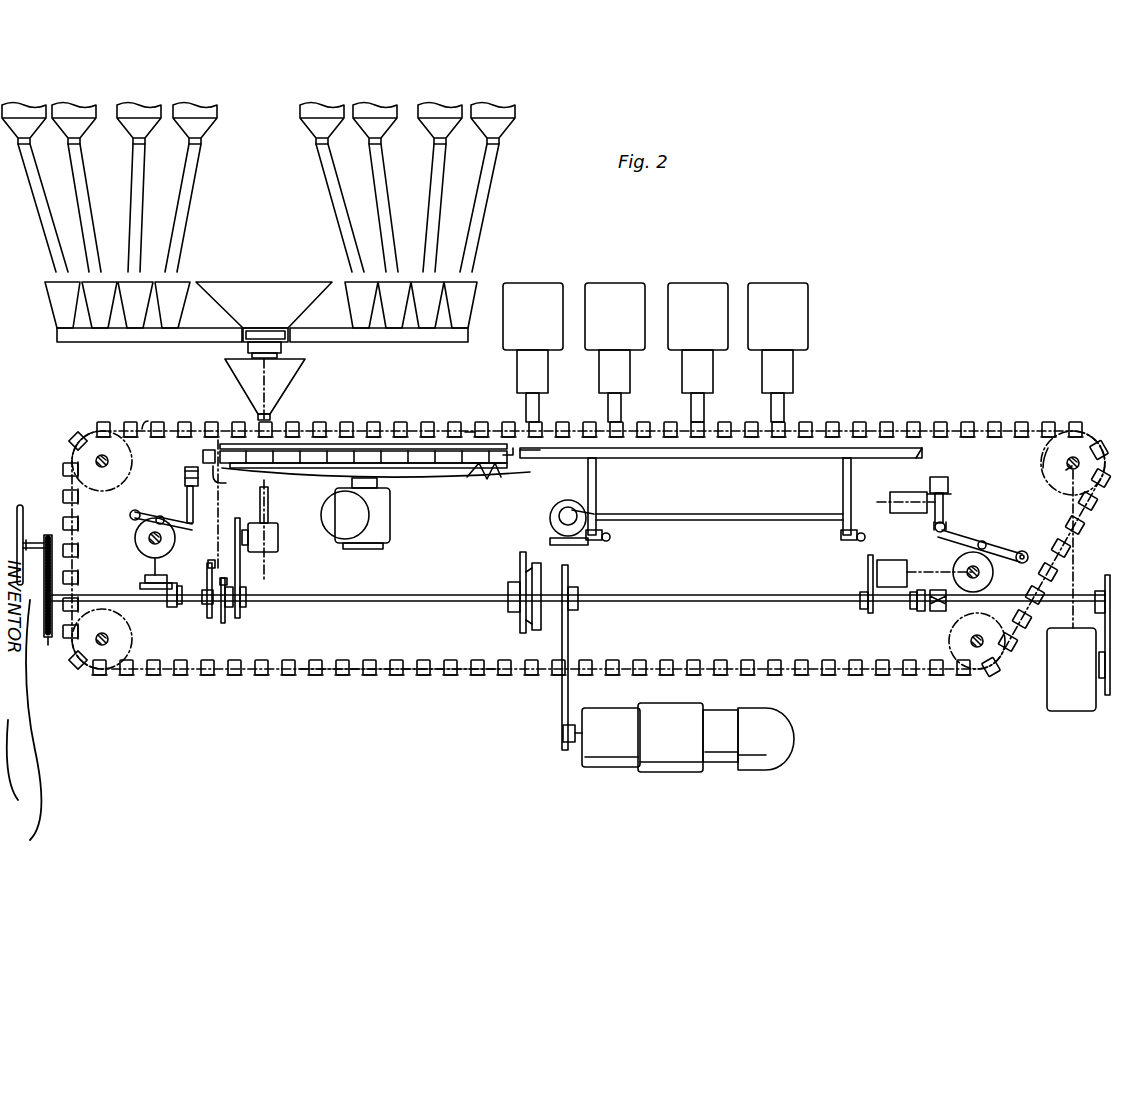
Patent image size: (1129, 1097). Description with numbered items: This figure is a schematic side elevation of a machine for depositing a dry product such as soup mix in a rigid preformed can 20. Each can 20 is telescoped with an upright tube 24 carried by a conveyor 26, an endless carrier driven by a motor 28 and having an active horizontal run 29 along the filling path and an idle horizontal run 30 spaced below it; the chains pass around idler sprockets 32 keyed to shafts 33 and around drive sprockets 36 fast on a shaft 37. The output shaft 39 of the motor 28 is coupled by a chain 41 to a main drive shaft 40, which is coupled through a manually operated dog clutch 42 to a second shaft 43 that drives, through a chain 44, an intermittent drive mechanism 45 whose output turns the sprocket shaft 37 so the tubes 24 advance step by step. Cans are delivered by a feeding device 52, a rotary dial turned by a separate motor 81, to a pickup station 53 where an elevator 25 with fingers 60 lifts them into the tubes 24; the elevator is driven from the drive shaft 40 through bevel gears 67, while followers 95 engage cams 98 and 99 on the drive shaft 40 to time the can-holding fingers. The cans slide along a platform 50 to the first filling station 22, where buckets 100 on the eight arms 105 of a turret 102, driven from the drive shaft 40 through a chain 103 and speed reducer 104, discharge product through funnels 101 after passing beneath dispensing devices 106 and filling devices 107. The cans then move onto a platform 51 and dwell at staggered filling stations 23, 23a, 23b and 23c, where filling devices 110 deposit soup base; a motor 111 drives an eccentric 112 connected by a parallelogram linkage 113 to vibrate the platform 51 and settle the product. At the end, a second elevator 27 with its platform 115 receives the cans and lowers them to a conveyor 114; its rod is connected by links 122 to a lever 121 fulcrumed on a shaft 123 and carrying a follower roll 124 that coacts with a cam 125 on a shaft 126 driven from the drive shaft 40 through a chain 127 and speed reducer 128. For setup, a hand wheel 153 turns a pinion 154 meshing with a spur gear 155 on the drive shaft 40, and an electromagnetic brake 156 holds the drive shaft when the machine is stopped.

The can 20 is at (772, 448).
The filling station 22 is at (262, 260).
The filling station 23 is at (549, 272).
The filling station 23a is at (628, 276).
The filling station 23b is at (706, 280).
The filling station 23c is at (786, 282).
The tube 24 is at (182, 422).
The elevator 25 is at (178, 483).
The conveyor 26 is at (146, 420).
The elevator 27 is at (963, 500).
The motor 28 is at (753, 770).
The horizontal run 29 is at (467, 427).
The idle horizontal run 30 is at (379, 690).
The idler sprocket 32 is at (85, 478).
The shaft 33 is at (108, 462).
The drive sprocket 36 is at (1044, 470).
The shaft 37 is at (1068, 466).
The output shaft 39 is at (574, 743).
The drive shaft 40 is at (615, 597).
The chain 41 is at (568, 620).
The dog clutch 42 is at (916, 610).
The second shaft 43 is at (1093, 592).
The chain 44 is at (1108, 575).
The intermittent drive mechanism 45 is at (1060, 711).
The platform 50 is at (518, 460).
The platform 51 is at (552, 460).
The feeding device 52 is at (430, 472).
The pickup station 53 is at (222, 436).
The finger 60 is at (238, 510).
The bevel gears 67 is at (142, 589).
The motor 81 is at (333, 516).
The follower 95 is at (227, 582).
The cam 98 is at (208, 618).
The cam 99 is at (223, 626).
The bucket 100 is at (148, 305).
The funnel 101 is at (297, 377).
The turret 102 is at (230, 348).
The chain 103 is at (240, 561).
The speed reducer 104 is at (278, 543).
The arm 105 is at (74, 342).
The dispensing device 106 is at (363, 107).
The filling device 107 is at (58, 107).
The filling device 110 is at (542, 374).
The motor 111 is at (554, 509).
The eccentric 112 is at (550, 520).
The parallelogram linkage 113 is at (596, 496).
The conveyor 114 is at (906, 512).
The platform 115 is at (950, 486).
The lever 121 is at (1008, 550).
The link 122 is at (934, 530).
The shaft 123 is at (1020, 563).
The follower roll 124 is at (984, 540).
The cam 125 is at (958, 560).
The shaft 126 is at (956, 575).
The chain 127 is at (868, 588).
The speed reducer 128 is at (880, 564).
The hand wheel 153 is at (19, 506).
The pinion 154 is at (48, 536).
The spur gear 155 is at (48, 642).
The electromagnetic brake 156 is at (520, 628).